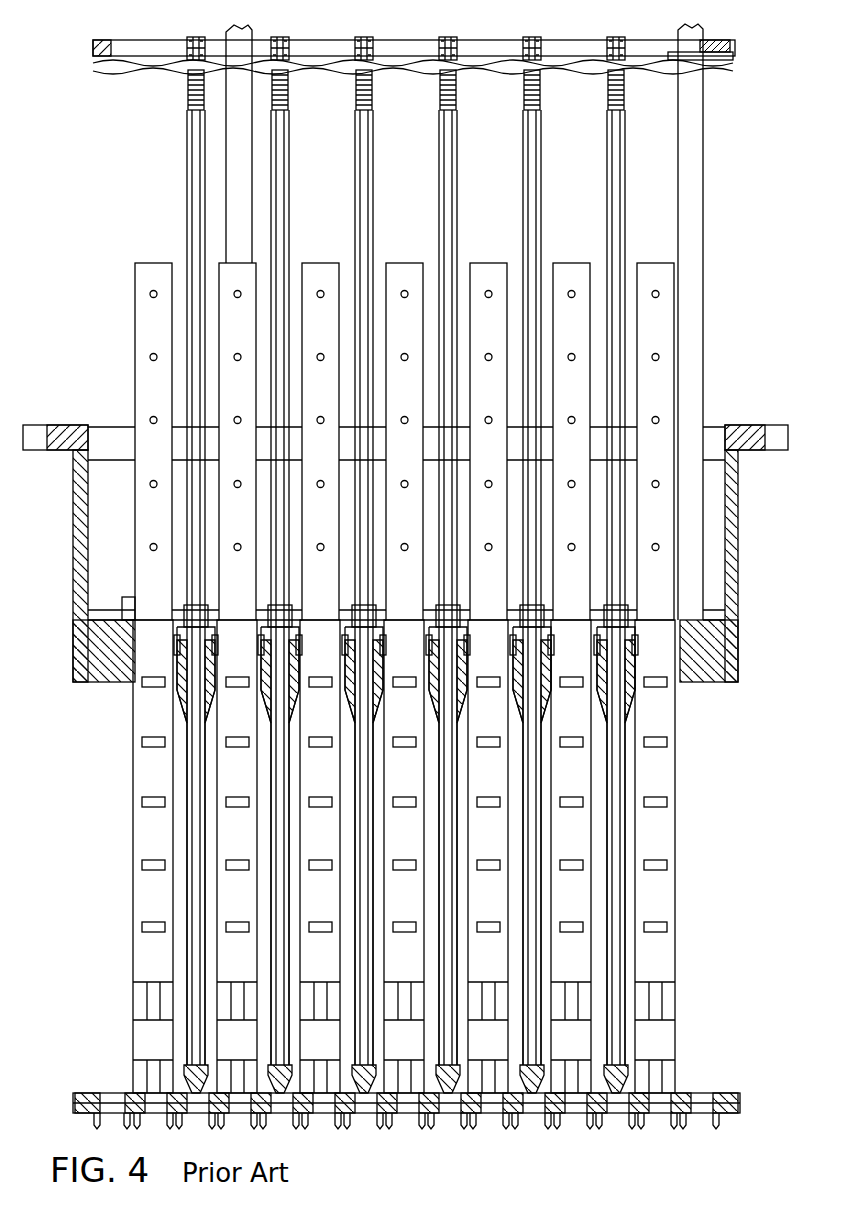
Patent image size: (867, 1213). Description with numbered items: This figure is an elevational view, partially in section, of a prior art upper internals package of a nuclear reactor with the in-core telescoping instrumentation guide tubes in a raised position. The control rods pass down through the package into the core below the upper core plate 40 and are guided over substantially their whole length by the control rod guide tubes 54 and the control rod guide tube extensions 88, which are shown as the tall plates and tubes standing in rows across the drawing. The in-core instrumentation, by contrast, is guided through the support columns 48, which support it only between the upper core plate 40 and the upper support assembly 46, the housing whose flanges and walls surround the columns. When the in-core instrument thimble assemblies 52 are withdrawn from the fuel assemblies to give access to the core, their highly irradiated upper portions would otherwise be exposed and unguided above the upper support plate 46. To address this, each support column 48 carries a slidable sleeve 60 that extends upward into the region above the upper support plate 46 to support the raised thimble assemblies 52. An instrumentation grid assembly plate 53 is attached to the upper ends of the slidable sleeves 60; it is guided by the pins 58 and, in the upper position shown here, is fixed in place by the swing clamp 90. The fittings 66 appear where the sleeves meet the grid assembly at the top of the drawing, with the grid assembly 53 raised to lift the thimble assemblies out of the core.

The upper core plate 40 is at (738, 1093).
The upper support assembly 46 is at (95, 682).
The support columns 48 is at (625, 909).
The in-core instrument thimble assemblies 52 is at (188, 1088).
The instrumentation grid assembly plate 53 is at (708, 48).
The control rod guide tubes 54 is at (669, 780).
The pins 58 is at (703, 355).
The slidable sleeve 60 is at (634, 188).
The coupling fitting 66 is at (623, 42).
The control rod guide tube extensions 88 is at (676, 263).
The swing clamp 90 is at (722, 60).